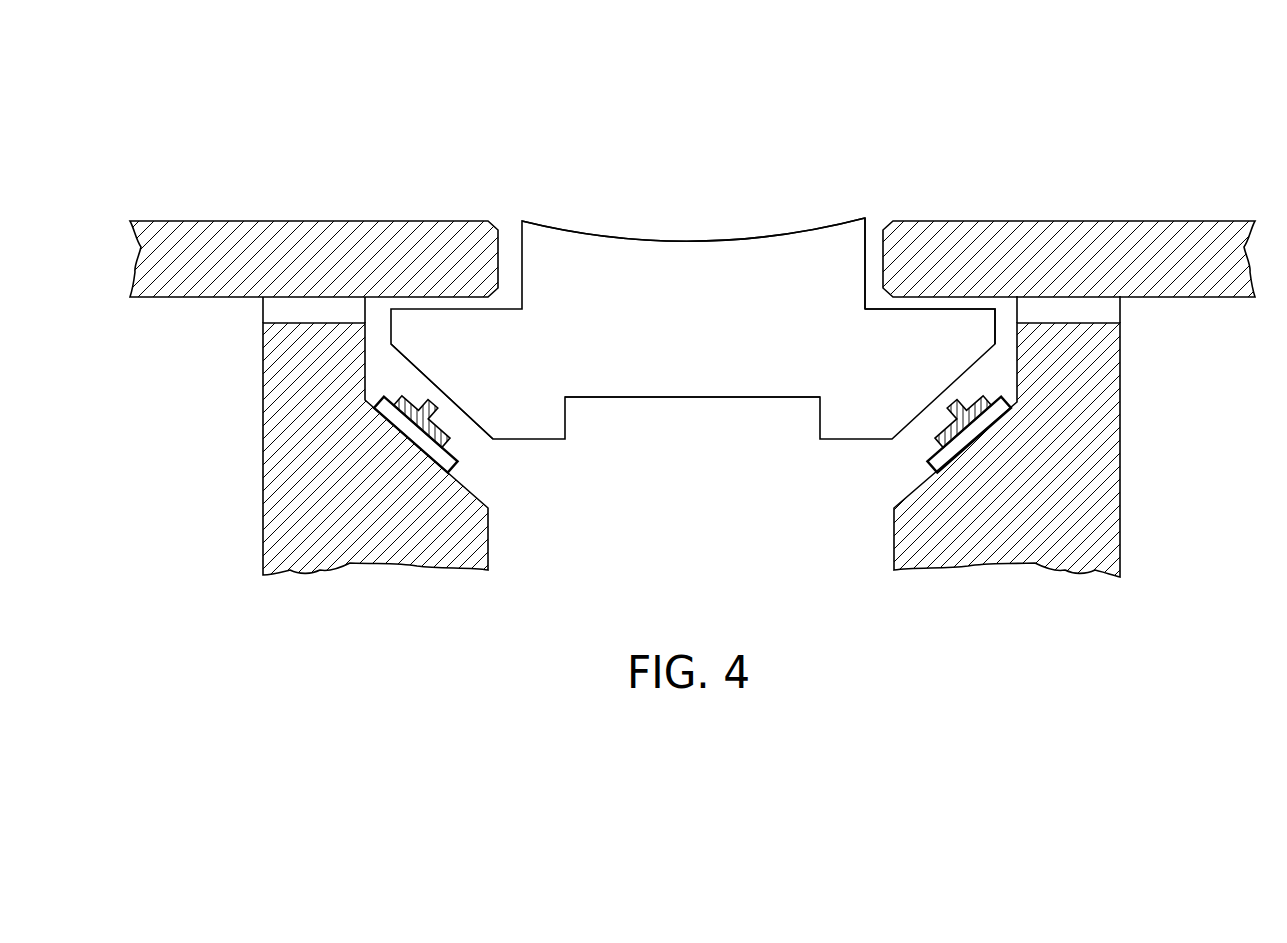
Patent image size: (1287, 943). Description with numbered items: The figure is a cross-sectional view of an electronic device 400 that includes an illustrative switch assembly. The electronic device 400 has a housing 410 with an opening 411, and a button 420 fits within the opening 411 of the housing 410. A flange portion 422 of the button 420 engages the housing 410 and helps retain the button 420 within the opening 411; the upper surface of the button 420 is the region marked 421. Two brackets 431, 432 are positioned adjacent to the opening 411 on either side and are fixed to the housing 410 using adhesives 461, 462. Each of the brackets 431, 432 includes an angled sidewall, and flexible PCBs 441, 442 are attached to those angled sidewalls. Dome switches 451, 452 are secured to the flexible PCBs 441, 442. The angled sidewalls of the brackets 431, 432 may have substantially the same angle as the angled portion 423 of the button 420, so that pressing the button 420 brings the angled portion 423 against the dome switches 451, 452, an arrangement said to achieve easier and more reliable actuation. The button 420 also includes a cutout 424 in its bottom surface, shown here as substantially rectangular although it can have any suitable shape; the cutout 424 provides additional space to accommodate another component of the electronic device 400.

The electronic device 400 is at (389, 64).
The housing 410 is at (285, 232).
The opening 411 is at (875, 188).
The button 420 is at (570, 228).
The curved top surface 421 is at (690, 268).
The flange portion 422 is at (945, 325).
The angled portion 423 is at (480, 432).
The cutout 424 is at (681, 430).
The bracket 431 is at (278, 485).
The bracket 432 is at (1098, 483).
The flexible PCB 441 is at (455, 442).
The flexible PCB 442 is at (930, 462).
The dome switch 451 is at (458, 462).
The dome switch 452 is at (927, 438).
The adhesive 461 is at (282, 307).
The adhesive 462 is at (1107, 310).